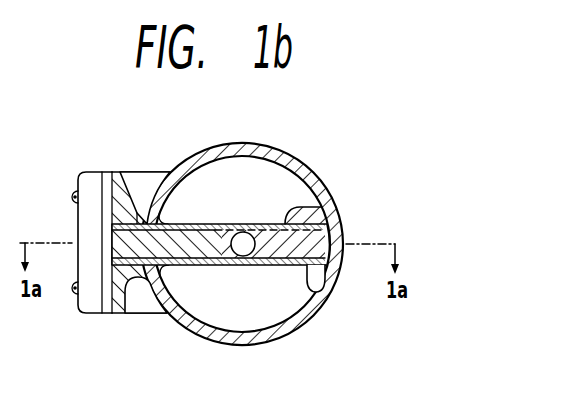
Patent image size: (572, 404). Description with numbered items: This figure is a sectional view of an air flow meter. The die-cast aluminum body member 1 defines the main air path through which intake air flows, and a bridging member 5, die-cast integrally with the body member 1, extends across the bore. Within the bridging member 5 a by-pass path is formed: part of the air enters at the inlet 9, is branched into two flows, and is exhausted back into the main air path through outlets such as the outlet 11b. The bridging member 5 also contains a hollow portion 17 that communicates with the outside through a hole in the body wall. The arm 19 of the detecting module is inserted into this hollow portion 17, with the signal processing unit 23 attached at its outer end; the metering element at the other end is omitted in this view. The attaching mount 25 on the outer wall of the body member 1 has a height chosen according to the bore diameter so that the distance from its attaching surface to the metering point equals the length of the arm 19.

The body member 1 is at (292, 153).
The bridging member 5 is at (332, 203).
The inlet 9 is at (244, 231).
The outlet 11b is at (320, 296).
The hollow portion 17 is at (203, 222).
The arm 19 is at (138, 212).
The signal processing unit 23 is at (78, 302).
The attaching mount 25 is at (126, 296).